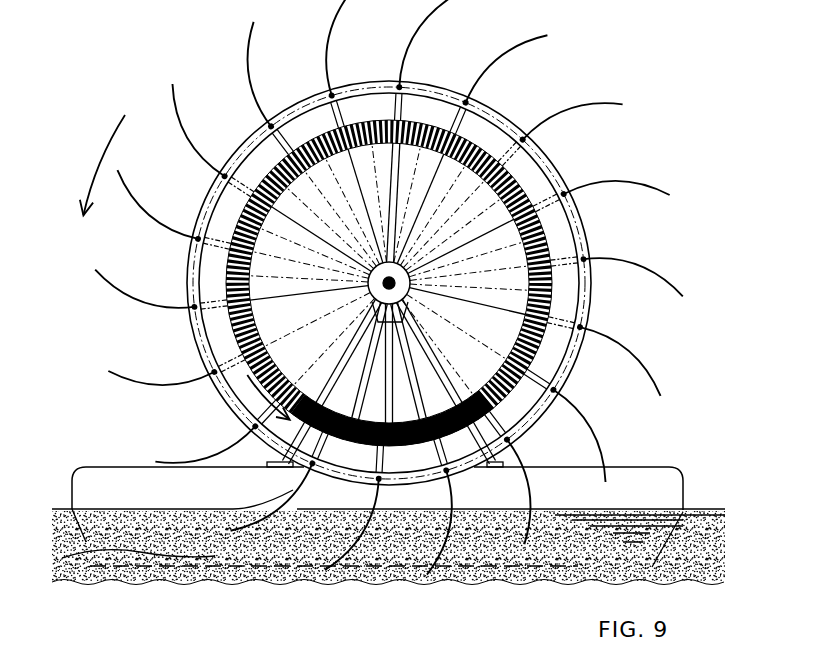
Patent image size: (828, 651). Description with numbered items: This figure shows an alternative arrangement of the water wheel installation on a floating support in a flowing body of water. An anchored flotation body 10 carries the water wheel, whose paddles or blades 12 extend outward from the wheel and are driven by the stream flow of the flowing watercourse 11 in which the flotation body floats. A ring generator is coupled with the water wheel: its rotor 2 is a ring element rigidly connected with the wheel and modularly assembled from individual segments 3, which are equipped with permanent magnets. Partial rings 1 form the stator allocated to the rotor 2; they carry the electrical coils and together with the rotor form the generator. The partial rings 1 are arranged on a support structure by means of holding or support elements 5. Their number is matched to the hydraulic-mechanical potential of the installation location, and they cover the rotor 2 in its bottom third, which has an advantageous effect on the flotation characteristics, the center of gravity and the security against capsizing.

The partial rings 1 is at (360, 410).
The rotor 2 is at (390, 262).
The individual segments 3 is at (318, 150).
The holding or support elements 5 is at (369, 323).
The flotation body 10 is at (642, 478).
The flowing watercourse 11 is at (388, 537).
The paddles or blades 12 is at (615, 100).